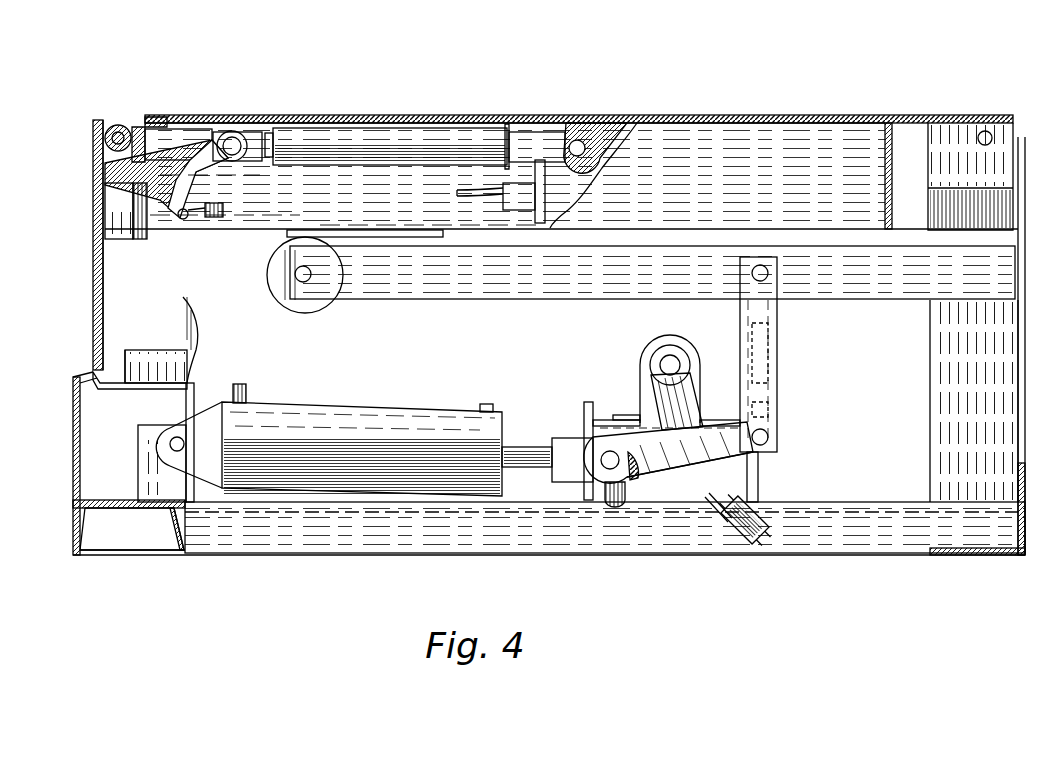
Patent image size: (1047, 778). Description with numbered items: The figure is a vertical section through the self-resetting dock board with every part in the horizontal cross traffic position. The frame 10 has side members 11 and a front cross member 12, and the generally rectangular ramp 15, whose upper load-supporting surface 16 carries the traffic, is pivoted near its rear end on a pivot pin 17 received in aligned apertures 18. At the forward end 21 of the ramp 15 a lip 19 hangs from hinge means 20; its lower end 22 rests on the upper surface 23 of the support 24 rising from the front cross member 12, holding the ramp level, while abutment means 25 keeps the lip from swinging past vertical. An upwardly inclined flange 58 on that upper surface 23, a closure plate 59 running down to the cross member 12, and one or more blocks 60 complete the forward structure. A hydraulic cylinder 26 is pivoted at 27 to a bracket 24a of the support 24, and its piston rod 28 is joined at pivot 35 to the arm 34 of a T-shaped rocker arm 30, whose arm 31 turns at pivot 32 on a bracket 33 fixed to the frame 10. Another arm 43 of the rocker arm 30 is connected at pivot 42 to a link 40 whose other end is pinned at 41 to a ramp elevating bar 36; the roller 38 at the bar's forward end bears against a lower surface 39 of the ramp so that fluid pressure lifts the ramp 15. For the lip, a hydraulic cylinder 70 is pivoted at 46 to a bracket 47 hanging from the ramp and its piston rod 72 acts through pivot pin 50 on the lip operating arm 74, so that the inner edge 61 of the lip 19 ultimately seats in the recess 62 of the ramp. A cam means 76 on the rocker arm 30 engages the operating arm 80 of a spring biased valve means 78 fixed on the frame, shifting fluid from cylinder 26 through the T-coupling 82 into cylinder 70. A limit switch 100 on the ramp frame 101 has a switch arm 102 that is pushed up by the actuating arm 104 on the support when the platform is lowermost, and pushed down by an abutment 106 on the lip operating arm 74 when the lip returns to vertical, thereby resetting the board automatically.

The frame 10 is at (652, 553).
The side members 11 is at (388, 556).
The front cross member 12 is at (174, 530).
The ramp 15 is at (728, 113).
The upper load-supporting surface 16 is at (690, 121).
The pivot pin 17 is at (977, 317).
The apertures 18 is at (973, 290).
The lip 19 is at (92, 220).
The hinge means 20 is at (120, 125).
The forward end 21 is at (178, 144).
The lower end 22 is at (110, 383).
The upper surface 23 is at (127, 390).
The support 24 is at (192, 396).
The bracket 24a is at (138, 464).
The abutment means 25 is at (122, 241).
The hydraulic cylinder 26 is at (336, 440).
The pivot 27 is at (173, 452).
The piston rod 28 is at (527, 447).
The rocker arm 30 is at (688, 468).
The arm 31 is at (700, 392).
The pivot 32 is at (680, 353).
The bracket 33 is at (622, 418).
The arm 34 is at (641, 475).
The pivot 35 is at (602, 472).
The ramp elevating bar 36 is at (540, 300).
The roller 38 is at (300, 302).
The lower surface 39 is at (410, 230).
The link 40 is at (777, 352).
The pivot 41 is at (770, 274).
The pivot 42 is at (770, 438).
The arm 43 is at (726, 460).
The pivot 46 is at (593, 175).
The bracket 47 is at (572, 172).
The pivot pin 50 is at (234, 133).
The flange 58 is at (84, 374).
The closure plate 59 is at (73, 430).
The blocks 60 is at (172, 376).
The inner edge 61 is at (97, 120).
The recess 62 is at (150, 119).
The hydraulic cylinder 70 is at (420, 168).
The piston rod 72 is at (270, 133).
The pawl arm 74 is at (200, 160).
The cam means 76 is at (615, 502).
The valve means 78 is at (757, 538).
The operating arm 80 is at (712, 512).
The T-coupling 82 is at (522, 209).
The limit switch 100 is at (226, 210).
The ramp frame 101 is at (345, 200).
The switch arm 102 is at (188, 219).
The actuating arm 104 is at (191, 305).
The abutment 106 is at (172, 208).